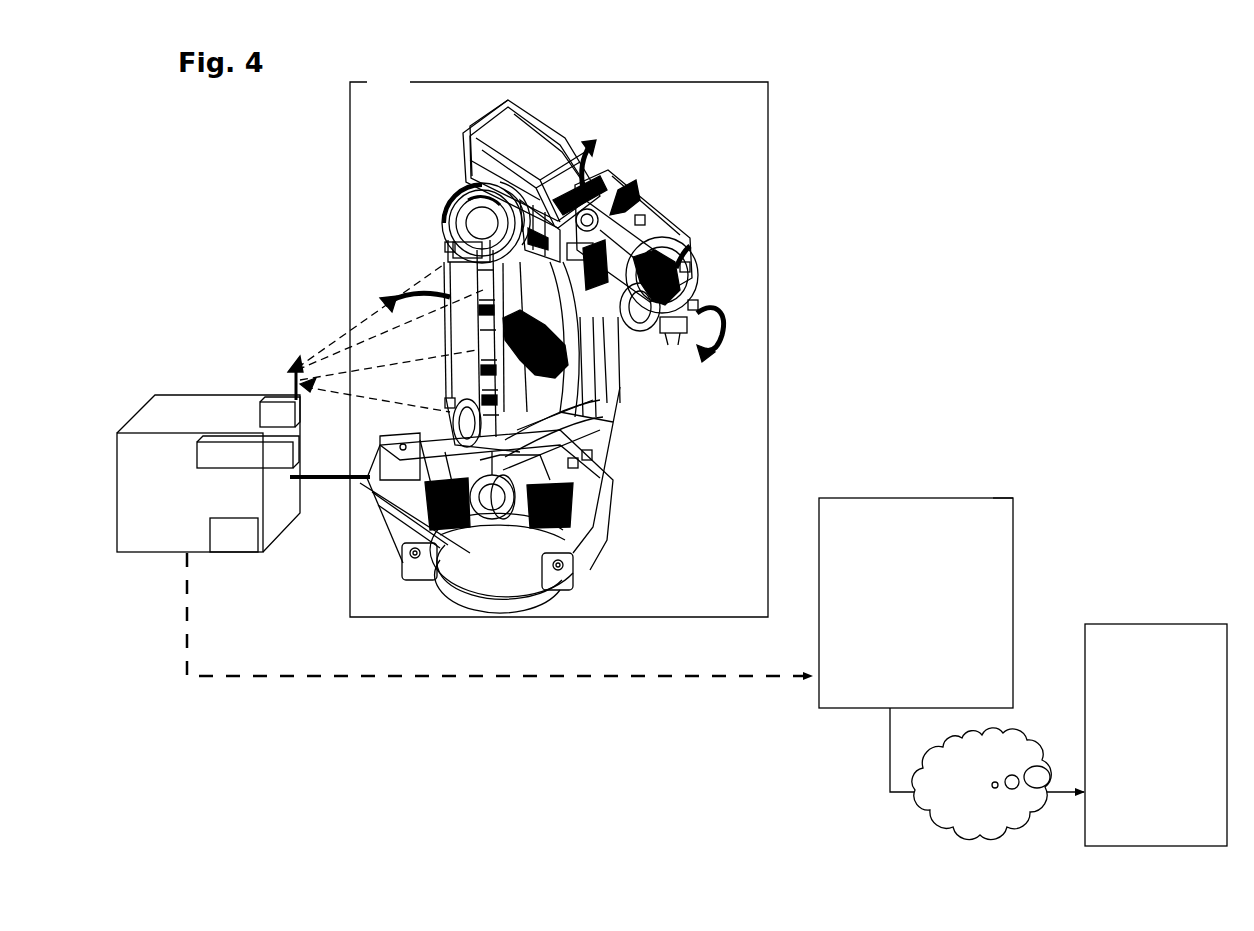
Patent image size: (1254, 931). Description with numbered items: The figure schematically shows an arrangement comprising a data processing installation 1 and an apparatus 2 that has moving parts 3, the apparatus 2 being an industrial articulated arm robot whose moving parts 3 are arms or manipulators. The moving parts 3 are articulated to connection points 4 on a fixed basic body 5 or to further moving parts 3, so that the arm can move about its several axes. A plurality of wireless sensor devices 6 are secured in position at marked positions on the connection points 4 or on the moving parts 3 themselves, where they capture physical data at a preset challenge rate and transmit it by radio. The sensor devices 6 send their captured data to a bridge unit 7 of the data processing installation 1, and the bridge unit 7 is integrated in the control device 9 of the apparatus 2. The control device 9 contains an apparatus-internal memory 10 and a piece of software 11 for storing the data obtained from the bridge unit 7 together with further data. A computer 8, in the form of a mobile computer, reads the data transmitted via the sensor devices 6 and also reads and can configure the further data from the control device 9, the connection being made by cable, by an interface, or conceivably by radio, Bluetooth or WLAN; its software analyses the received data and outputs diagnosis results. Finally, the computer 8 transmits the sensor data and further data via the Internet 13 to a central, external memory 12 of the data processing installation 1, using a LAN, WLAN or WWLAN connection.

The data processing installation 1 is at (993, 500).
The apparatus 2 is at (540, 130).
The moving parts 3 is at (687, 267).
The connection points 4 is at (533, 537).
The fixed basic body 5 is at (500, 552).
The sensor devices 6 is at (640, 220).
The bridge unit 7 is at (371, 347).
The computer 8 is at (960, 502).
The control device 9 is at (300, 408).
The apparatus-internal memory 10 is at (222, 453).
The piece of software 11 is at (234, 535).
The central, external memory 12 is at (1156, 735).
The Internet 13 is at (981, 784).